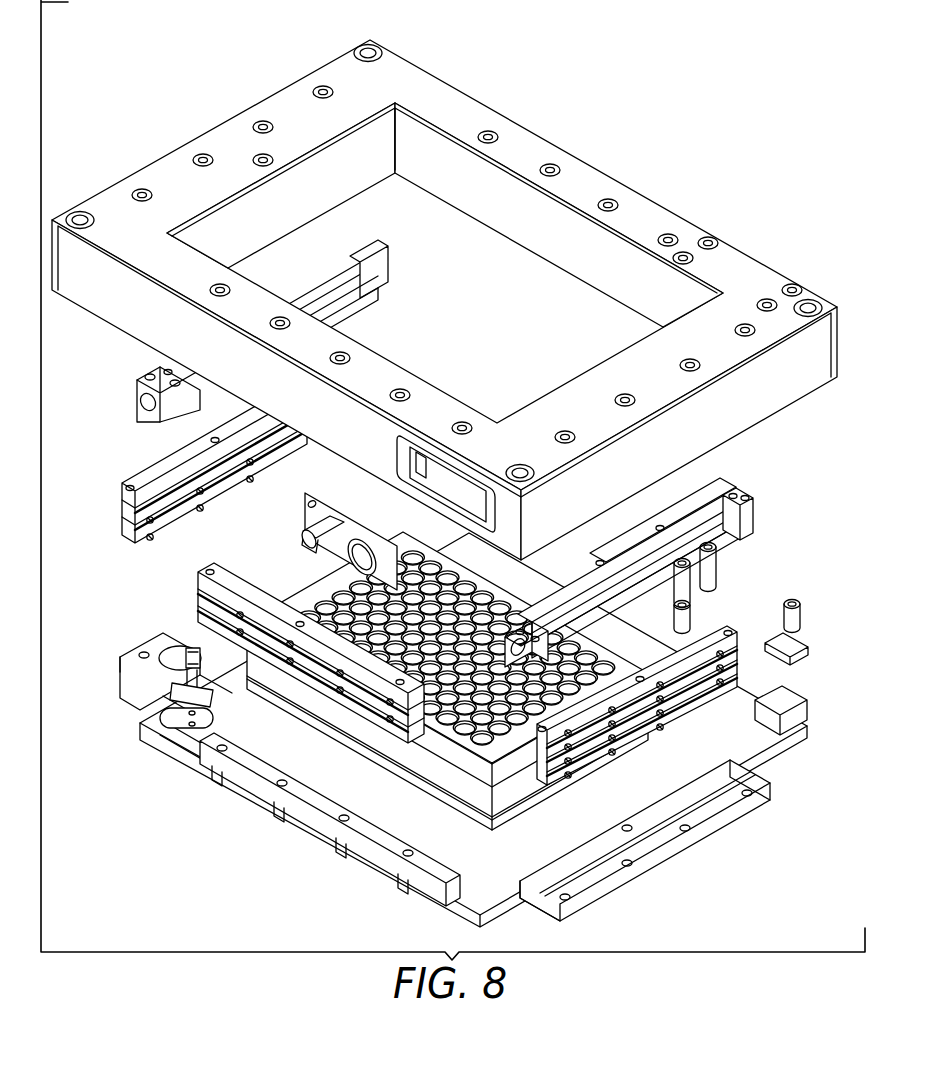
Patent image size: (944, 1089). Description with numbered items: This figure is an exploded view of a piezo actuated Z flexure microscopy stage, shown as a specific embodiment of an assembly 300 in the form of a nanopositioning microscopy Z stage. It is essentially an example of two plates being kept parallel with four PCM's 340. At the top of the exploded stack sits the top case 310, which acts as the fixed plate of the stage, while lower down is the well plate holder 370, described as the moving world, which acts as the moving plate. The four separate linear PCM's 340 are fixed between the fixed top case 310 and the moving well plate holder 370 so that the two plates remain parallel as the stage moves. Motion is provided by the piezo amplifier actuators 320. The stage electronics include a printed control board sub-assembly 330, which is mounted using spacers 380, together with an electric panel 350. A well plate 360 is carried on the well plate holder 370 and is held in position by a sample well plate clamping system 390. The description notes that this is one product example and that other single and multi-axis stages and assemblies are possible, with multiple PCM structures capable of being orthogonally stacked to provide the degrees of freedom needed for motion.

The assembly 300 is at (457, 482).
The top case 310 is at (748, 268).
The piezo amplifier actuators 320 is at (136, 392).
The printed control board (PCB) sub-assembly 330 is at (790, 645).
The PCM's 340 is at (130, 480).
The electric panel 350 is at (318, 519).
The well plate 360 is at (440, 775).
The well plate holder 370 is at (692, 792).
The spacers 380 is at (801, 607).
The sample well plate clamping system 390 is at (174, 655).